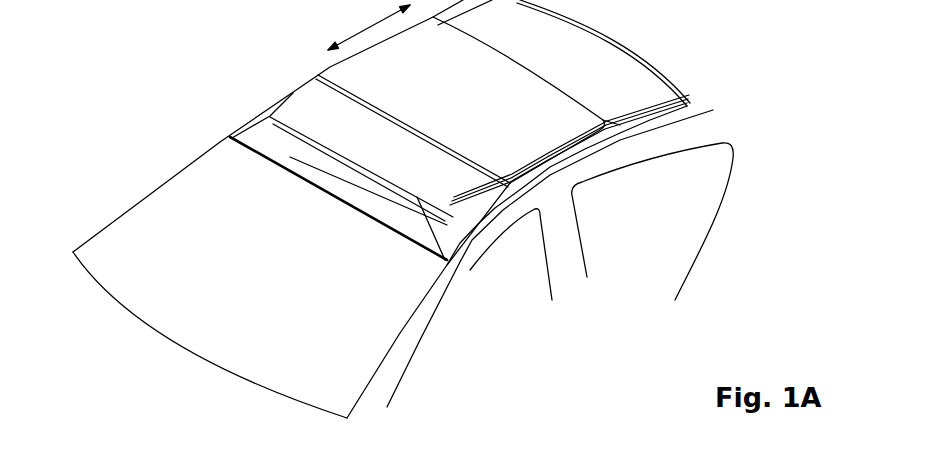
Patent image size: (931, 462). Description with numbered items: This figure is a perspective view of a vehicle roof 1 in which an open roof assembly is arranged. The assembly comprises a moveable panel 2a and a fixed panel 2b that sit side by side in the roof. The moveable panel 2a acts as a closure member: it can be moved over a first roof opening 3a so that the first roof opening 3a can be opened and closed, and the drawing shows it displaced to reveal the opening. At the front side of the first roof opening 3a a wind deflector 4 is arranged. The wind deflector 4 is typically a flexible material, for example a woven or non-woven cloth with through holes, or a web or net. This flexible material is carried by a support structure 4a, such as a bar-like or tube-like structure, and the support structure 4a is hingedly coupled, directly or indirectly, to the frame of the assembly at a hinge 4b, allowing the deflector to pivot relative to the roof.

The vehicle roof 1 is at (680, 140).
The moveable panel 2a is at (518, 100).
The fixed panel 2b is at (529, 62).
The first roof opening 3a is at (338, 122).
The wind deflector 4 is at (292, 139).
The support structure 4a is at (447, 260).
The hinge 4b is at (293, 91).